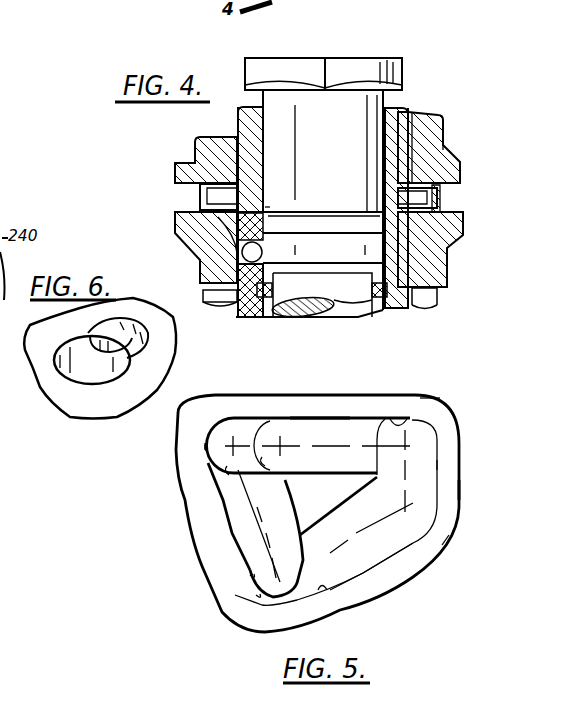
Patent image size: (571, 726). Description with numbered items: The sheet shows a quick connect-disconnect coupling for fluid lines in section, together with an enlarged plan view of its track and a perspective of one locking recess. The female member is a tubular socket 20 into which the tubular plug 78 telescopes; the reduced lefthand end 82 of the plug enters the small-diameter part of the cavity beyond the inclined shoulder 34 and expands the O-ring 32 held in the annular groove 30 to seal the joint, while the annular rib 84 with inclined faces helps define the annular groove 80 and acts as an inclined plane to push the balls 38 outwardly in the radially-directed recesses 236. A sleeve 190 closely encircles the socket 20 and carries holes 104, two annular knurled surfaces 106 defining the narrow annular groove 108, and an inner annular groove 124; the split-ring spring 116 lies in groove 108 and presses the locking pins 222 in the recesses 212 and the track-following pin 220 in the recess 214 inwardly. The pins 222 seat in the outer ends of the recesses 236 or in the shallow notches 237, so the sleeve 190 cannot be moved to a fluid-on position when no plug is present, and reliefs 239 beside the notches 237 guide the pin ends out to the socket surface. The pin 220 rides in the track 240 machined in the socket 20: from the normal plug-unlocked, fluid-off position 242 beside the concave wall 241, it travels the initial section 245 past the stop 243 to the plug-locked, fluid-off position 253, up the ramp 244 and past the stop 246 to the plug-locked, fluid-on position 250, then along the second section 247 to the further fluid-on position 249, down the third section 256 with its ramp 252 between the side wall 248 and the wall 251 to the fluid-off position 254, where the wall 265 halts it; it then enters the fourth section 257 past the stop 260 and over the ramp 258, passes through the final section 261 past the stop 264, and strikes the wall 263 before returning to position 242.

In FIG. 4, the tubular socket 20 is at (411, 103).
In FIG. 6, the tubular socket 20 is at (115, 410).
In FIG. 5, the tubular socket 20 is at (406, 594).
In FIG. 4, the annular groove 30 is at (407, 310).
In FIG. 4, the O-ring 32 is at (388, 318).
In FIG. 4, the inclined shoulder 34 is at (362, 306).
In FIG. 4, the balls 38 is at (268, 232).
In FIG. 4, the tubular plug 78 is at (357, 56).
In FIG. 4, the annular groove 80 is at (330, 223).
In FIG. 4, the lefthand end of plug 82 is at (346, 242).
In FIG. 4, the annular rib 84 is at (333, 317).
In FIG. 4, the holes 104 is at (207, 294).
In FIG. 4, the annular knurled surfaces 106 is at (177, 173).
In FIG. 4, the annular groove 108 is at (183, 212).
In FIG. 4, the split-ring spring 116 is at (193, 192).
In FIG. 4, the annular groove 124 is at (440, 140).
In FIG. 4, the sleeve 190 is at (447, 112).
In FIG. 4, the recesses 212 is at (198, 252).
In FIG. 4, the recess 214 is at (437, 243).
In FIG. 4, the pin 220 is at (452, 153).
In FIG. 4, the locking pins 222 is at (217, 183).
In FIG. 4, the radially-directed recesses 236 is at (247, 303).
In FIG. 6, the radially-directed recesses 236 is at (87, 373).
In FIG. 4, the notches 237 is at (268, 207).
In FIG. 6, the notches 237 is at (133, 355).
In FIG. 4, the reliefs 239 is at (265, 212).
In FIG. 6, the reliefs 239 is at (140, 320).
In FIG. 4, the track 240 is at (447, 277).
In FIG. 5, the track 240 is at (441, 493).
In FIG. 5, the concave wall 241 is at (208, 467).
In FIG. 5, the plug-unlocked, fluid-off position 242 is at (215, 490).
In FIG. 5, the stop 243 is at (232, 533).
In FIG. 5, the ramp 244 is at (350, 427).
In FIG. 5, the initial section 245 is at (321, 411).
In FIG. 5, the stop 246 is at (423, 437).
In FIG. 5, the second section 247 is at (441, 463).
In FIG. 5, the side wall 248 is at (343, 510).
In FIG. 5, the further plug-locked, fluid-on position 249 is at (445, 545).
In FIG. 5, the plug-locked, fluid-on position 250 is at (427, 433).
In FIG. 5, the wall 251 is at (323, 587).
In FIG. 5, the ramp 252 is at (357, 578).
In FIG. 5, the plug-locked, fluid-off position 253 is at (268, 416).
In FIG. 5, the plug-locked, fluid-off position 254 is at (273, 607).
In FIG. 5, the third section 256 is at (408, 550).
In FIG. 5, the fourth section 257 is at (232, 562).
In FIG. 5, the ramp 258 is at (236, 553).
In FIG. 5, the stop 260 is at (253, 597).
In FIG. 5, the final section 261 is at (289, 483).
In FIG. 5, the wall 263 is at (244, 418).
In FIG. 5, the stop 264 is at (222, 508).
In FIG. 5, the wall 265 is at (250, 612).